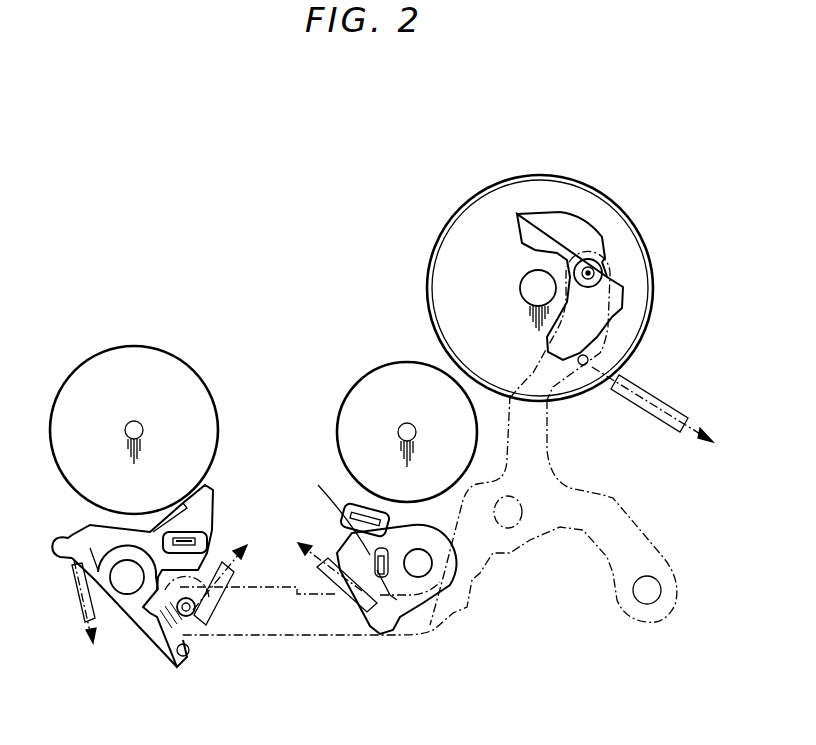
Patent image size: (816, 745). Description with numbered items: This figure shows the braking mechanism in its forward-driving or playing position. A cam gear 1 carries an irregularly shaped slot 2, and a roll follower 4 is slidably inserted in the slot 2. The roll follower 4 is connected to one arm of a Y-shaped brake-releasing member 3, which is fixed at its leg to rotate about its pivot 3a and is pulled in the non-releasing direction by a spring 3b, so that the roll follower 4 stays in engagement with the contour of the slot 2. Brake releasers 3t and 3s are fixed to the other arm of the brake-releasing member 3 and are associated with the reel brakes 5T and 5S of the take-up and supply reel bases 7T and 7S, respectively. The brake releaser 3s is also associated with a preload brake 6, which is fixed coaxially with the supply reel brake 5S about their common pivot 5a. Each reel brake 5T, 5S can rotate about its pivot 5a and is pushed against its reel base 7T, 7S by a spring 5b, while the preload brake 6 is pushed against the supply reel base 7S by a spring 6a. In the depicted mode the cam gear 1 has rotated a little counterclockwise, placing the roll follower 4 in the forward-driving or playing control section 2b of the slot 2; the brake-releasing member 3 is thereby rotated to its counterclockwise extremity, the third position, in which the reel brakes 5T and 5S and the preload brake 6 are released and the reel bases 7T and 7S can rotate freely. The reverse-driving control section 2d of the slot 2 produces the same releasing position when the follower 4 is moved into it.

The cam gear 1 is at (509, 192).
The irregularly shaped slot 2 is at (571, 233).
The roll follower 4 is at (590, 272).
The forward-driving or playing control section 2b is at (607, 277).
The reverse-driving control section 2d is at (590, 340).
The spring 3b is at (655, 400).
The brake-releasing member 3 is at (613, 517).
The pivot 3a is at (650, 590).
The supply reel base 7S is at (152, 363).
The take-up reel base 7T is at (372, 390).
The preload brake 6 is at (203, 498).
The supply reel brake 5S is at (183, 534).
The brake releaser 3s is at (222, 564).
The take-up reel brake 5T is at (353, 507).
The brake releaser 3t is at (332, 538).
The pivot 5a is at (125, 580).
The spring 5b is at (217, 600).
The spring 6a is at (75, 597).